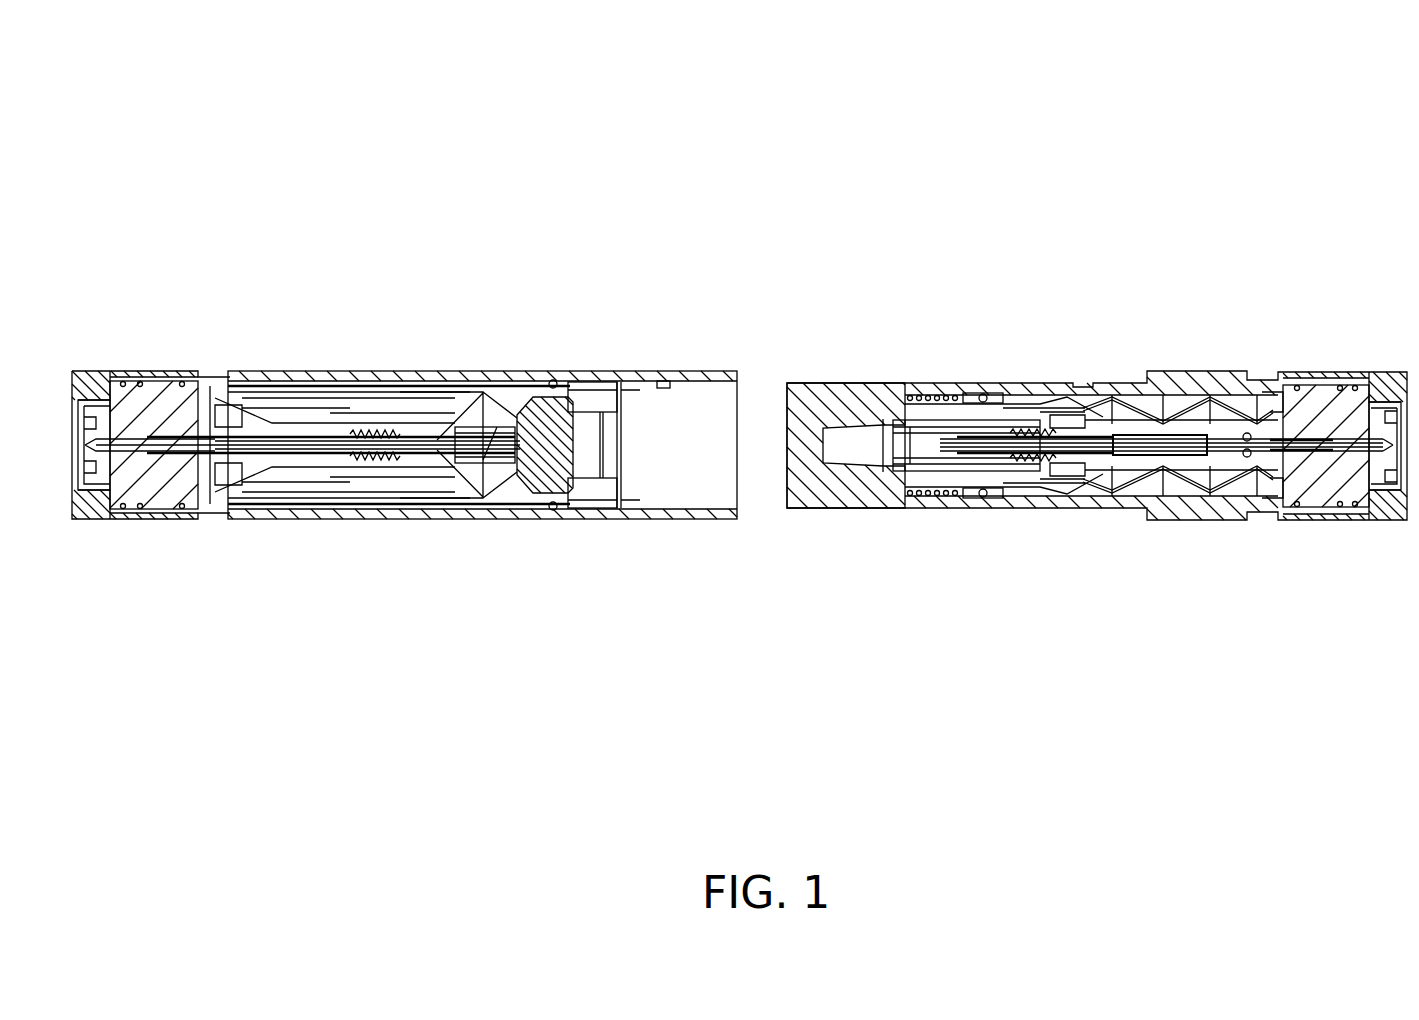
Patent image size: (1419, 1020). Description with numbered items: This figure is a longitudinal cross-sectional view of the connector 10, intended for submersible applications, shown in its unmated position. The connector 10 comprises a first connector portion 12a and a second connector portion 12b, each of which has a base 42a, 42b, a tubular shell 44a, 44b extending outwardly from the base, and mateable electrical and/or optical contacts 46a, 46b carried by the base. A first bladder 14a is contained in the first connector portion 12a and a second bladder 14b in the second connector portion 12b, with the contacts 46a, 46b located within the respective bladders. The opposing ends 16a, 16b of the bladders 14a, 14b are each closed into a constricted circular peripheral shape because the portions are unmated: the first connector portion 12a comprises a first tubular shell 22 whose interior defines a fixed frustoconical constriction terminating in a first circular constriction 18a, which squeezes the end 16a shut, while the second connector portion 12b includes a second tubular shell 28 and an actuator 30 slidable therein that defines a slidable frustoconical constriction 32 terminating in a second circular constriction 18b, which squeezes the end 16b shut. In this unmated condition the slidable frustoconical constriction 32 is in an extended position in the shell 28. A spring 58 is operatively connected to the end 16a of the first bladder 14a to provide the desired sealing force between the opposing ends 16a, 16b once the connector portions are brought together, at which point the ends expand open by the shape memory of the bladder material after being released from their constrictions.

The connector 10 is at (795, 190).
The first connector portion 12a is at (1112, 328).
The second connector portion 12b is at (280, 337).
The first bladder 14a is at (1197, 356).
The second bladder 14b is at (473, 477).
The end of the first bladder 16a is at (1052, 373).
The end of the second bladder 16b is at (615, 367).
The first circular constriction 18a is at (843, 542).
The second circular constriction 18b is at (535, 360).
The first tubular shell 22 is at (1027, 556).
The second tubular shell 28 is at (348, 567).
The actuator 30 is at (544, 551).
The slidable frustoconical constriction 32 is at (606, 597).
The base 42a is at (1334, 530).
The base 42b is at (151, 549).
The tubular shell 44a is at (1053, 548).
The tubular shell 44b is at (332, 556).
The contact 46a is at (957, 560).
The contact 46b is at (406, 345).
The spring 58 is at (982, 358).